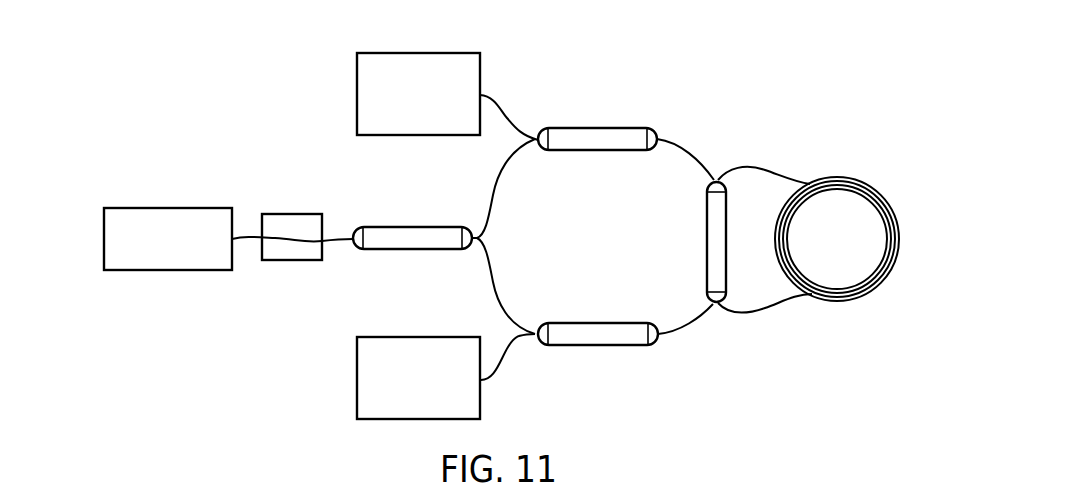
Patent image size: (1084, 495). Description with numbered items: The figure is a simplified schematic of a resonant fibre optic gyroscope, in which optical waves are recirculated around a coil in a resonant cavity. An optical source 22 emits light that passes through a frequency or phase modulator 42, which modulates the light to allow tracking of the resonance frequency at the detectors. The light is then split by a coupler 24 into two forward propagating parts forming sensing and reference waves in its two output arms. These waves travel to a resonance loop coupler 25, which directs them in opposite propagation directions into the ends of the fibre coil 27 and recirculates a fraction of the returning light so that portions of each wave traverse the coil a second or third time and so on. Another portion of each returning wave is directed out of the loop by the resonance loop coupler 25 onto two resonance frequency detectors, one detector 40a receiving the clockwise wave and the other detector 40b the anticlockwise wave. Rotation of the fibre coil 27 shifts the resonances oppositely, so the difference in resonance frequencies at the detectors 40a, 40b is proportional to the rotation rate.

The optical source 22 is at (151, 250).
The frequency or phase modulator 42 is at (296, 261).
The coupler 24 is at (410, 250).
The resonance frequency detector 40a is at (392, 108).
The resonance frequency detector 40b is at (392, 391).
The resonance loop coupler 25 is at (706, 241).
The fibre coil 27 is at (837, 302).